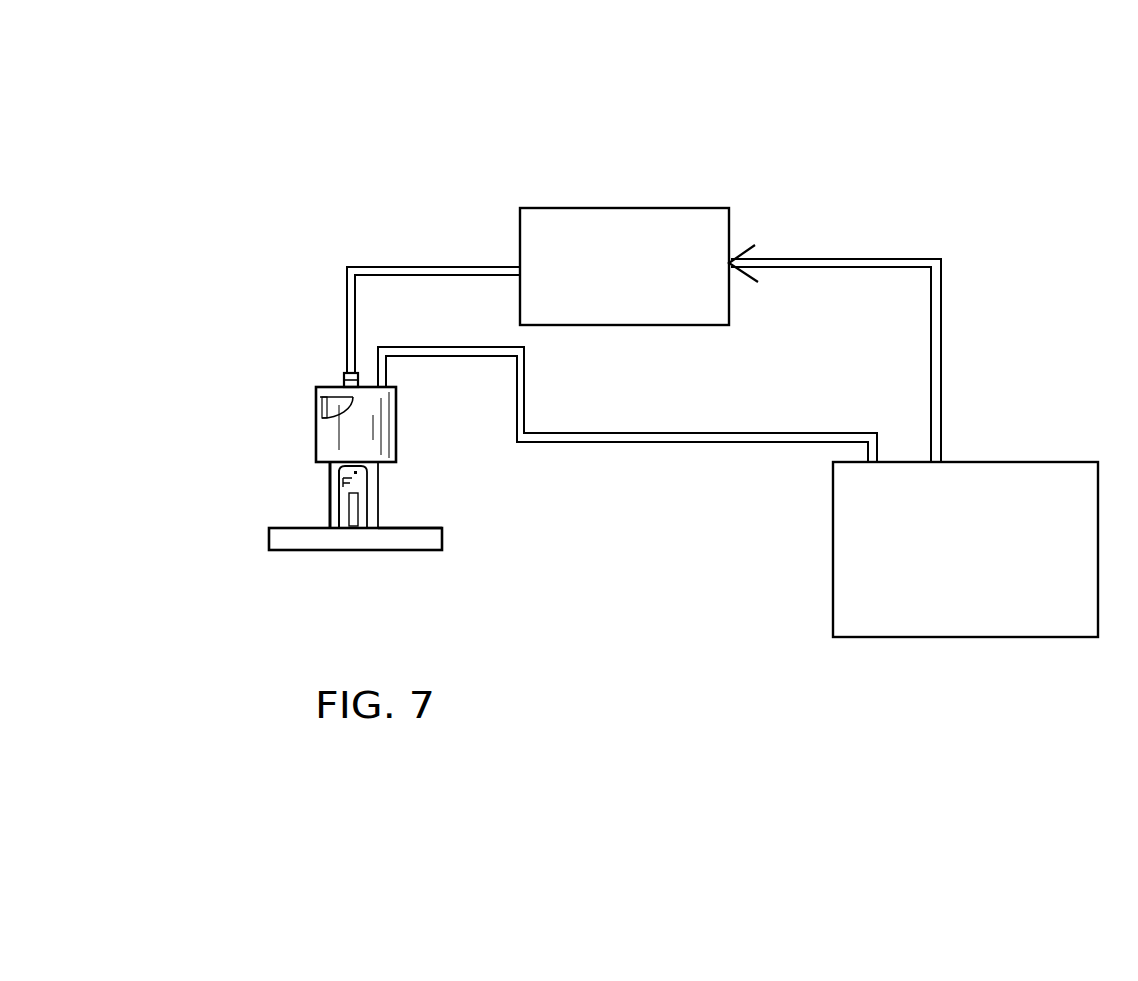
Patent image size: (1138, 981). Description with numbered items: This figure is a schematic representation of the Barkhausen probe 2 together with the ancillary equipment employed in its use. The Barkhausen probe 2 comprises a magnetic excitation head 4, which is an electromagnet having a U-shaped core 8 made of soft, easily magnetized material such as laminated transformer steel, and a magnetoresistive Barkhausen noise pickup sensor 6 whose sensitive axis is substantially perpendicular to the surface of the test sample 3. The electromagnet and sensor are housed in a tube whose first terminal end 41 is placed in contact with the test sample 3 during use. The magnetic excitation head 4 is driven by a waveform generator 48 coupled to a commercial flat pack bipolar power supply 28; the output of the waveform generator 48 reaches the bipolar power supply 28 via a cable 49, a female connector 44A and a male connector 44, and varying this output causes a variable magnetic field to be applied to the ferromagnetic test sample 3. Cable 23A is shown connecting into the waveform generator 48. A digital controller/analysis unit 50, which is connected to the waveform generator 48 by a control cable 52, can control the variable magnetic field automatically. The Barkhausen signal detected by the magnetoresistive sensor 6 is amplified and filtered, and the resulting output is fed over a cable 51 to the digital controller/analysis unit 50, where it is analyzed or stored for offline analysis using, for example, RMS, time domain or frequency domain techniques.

The Barkhausen probe 2 is at (315, 391).
The test sample 3 is at (292, 528).
The magnetic excitation head 4 is at (322, 502).
The magnetoresistive Barkhausen noise pickup sensor 6 is at (357, 502).
The U-shaped core 8 is at (330, 482).
The drive cable 23A is at (415, 268).
The bipolar power supply 28 is at (272, 385).
The first terminal end 41 is at (385, 527).
The male connector 44 is at (340, 383).
The female connector 44A is at (349, 376).
The waveform generator 48 is at (670, 206).
The cable 49 is at (432, 357).
The digital controller/analysis unit 50 is at (832, 568).
The cable 51 is at (623, 437).
The control cable 52 is at (942, 323).